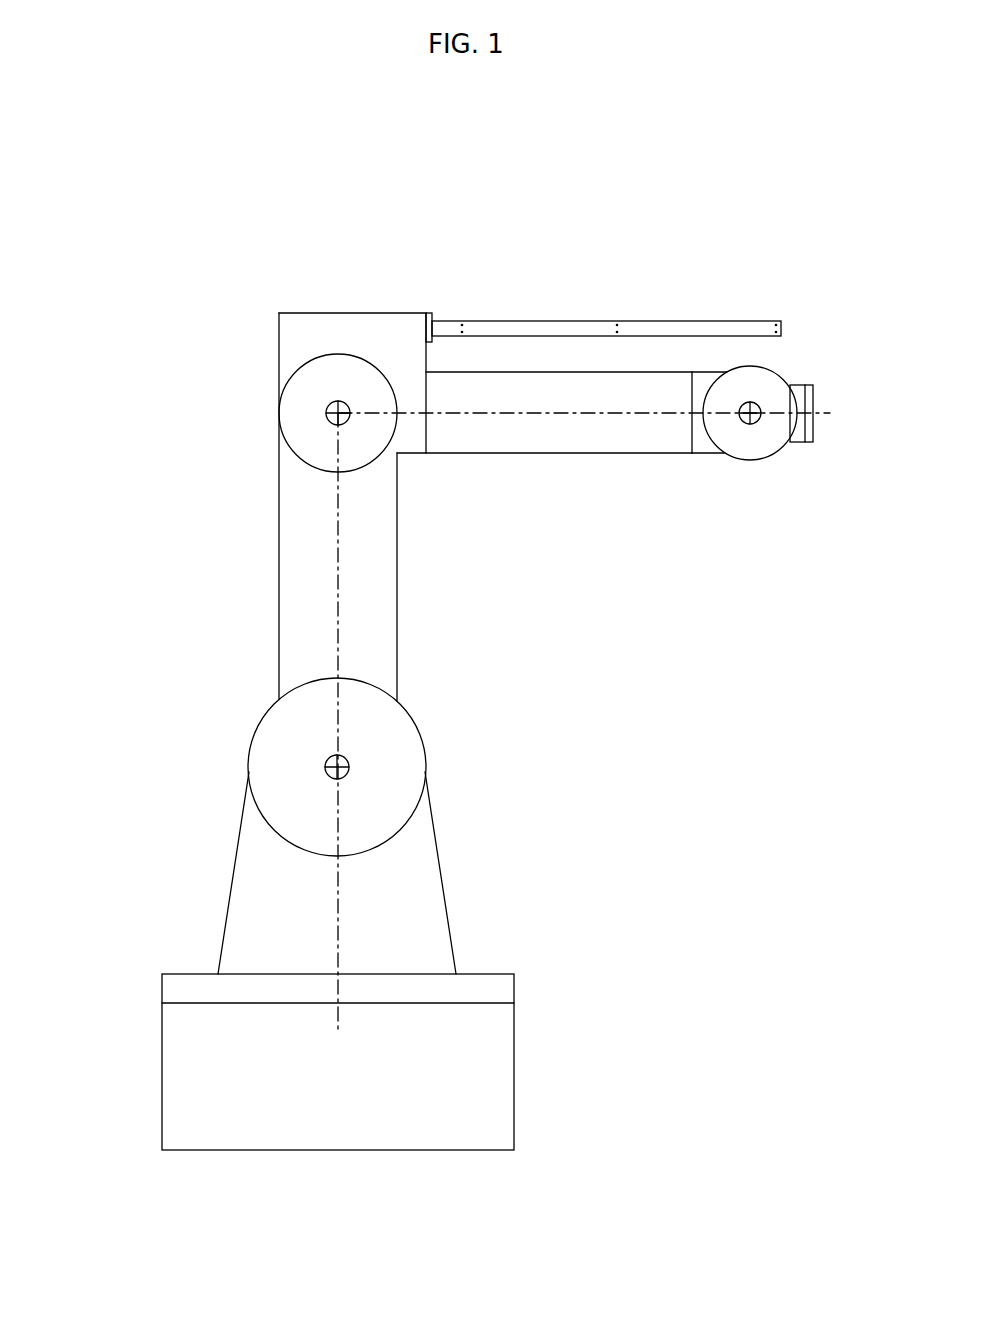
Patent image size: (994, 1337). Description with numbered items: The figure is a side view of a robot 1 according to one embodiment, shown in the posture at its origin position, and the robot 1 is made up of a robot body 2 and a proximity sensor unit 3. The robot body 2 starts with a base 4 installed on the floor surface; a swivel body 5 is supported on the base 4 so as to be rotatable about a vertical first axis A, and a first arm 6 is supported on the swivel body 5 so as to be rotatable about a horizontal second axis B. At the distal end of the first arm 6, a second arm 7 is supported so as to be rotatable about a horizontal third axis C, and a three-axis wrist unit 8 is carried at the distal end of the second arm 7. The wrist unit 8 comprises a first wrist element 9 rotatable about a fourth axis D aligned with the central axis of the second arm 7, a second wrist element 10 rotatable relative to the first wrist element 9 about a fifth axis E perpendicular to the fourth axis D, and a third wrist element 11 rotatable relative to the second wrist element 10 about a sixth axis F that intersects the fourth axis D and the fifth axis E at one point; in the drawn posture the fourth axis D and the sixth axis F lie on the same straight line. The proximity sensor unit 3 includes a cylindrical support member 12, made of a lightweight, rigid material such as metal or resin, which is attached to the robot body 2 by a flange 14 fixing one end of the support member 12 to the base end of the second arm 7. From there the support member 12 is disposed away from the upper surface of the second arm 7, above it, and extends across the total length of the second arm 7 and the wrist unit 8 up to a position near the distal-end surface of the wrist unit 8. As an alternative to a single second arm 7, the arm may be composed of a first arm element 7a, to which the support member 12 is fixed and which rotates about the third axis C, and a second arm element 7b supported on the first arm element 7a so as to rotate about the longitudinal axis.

The robot 1 is at (178, 190).
The robot body 2 is at (258, 445).
The proximity sensor unit 3 is at (695, 305).
The base 4 is at (162, 1058).
The swivel body 5 is at (235, 848).
The first arm 6 is at (278, 548).
The second arm 7 is at (333, 300).
The first arm element 7a is at (412, 456).
The second arm element 7b is at (550, 456).
The wrist unit 8 is at (751, 475).
The first wrist element 9 is at (704, 457).
The second wrist element 10 is at (773, 457).
The third wrist element 11 is at (815, 395).
The support member 12 is at (550, 327).
The flange 14 is at (432, 326).
The first axis A is at (339, 912).
The second axis B is at (325, 760).
The third axis C is at (328, 405).
The fourth axis D is at (723, 418).
The fifth axis E is at (757, 405).
The sixth axis F is at (827, 418).